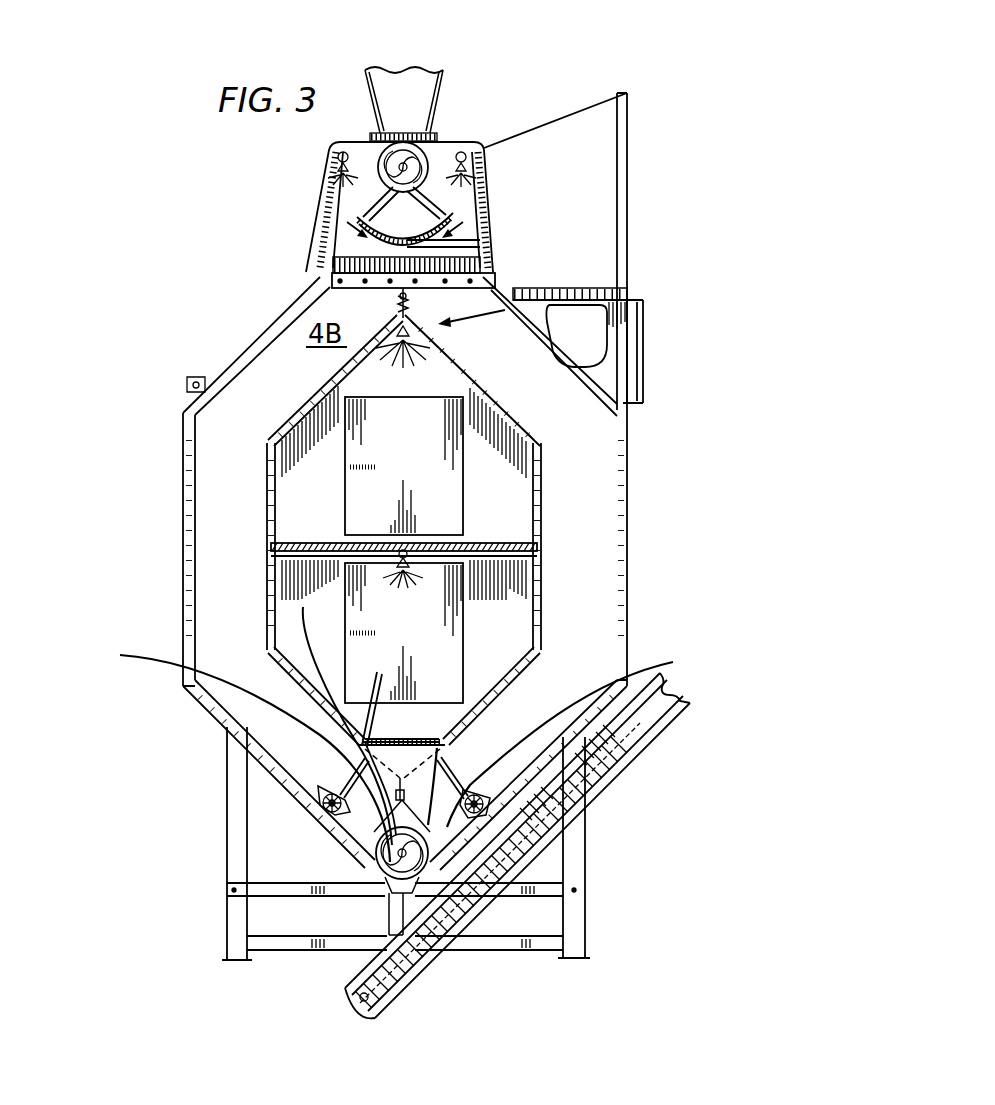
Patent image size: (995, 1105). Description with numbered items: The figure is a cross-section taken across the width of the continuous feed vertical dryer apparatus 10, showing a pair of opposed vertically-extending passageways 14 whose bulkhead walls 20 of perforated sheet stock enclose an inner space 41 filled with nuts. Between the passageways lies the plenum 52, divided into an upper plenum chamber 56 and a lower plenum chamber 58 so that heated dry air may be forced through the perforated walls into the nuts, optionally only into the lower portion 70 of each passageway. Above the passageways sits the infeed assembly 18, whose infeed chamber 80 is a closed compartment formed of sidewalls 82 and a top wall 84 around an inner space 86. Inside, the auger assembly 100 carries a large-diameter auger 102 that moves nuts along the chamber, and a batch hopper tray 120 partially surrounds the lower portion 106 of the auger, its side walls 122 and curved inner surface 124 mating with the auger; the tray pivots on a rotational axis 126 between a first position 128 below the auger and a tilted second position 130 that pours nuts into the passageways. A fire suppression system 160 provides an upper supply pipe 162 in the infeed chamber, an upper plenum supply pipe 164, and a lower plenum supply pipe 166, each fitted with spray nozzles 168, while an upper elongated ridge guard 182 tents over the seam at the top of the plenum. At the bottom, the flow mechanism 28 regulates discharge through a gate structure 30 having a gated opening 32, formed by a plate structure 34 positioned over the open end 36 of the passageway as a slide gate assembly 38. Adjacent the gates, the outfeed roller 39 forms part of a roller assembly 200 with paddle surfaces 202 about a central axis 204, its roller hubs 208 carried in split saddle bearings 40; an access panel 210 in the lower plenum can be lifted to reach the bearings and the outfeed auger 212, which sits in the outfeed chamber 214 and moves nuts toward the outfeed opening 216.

The continuous feed vertical dryer apparatus 10 is at (107, 936).
The vertically-extending passageway 14 is at (597, 492).
The infeed assembly 18 is at (306, 198).
The bulkhead wall 20 is at (620, 551).
The flow mechanism 28 is at (293, 824).
The gate structure 30 is at (570, 738).
The gated opening 32 is at (375, 828).
The plate structure 34 is at (237, 749).
The open end 36 is at (317, 760).
The slide gate assembly 38 is at (378, 840).
The outfeed roller 39 is at (335, 830).
The split saddle bearing 40 is at (318, 789).
The inner space 41 is at (300, 405).
The plenum 52 is at (500, 490).
The upper plenum chamber 56 is at (297, 465).
The lower plenum chamber 58 is at (300, 618).
The lower portion 70 is at (593, 632).
The infeed chamber 80 is at (447, 172).
The sidewall 82 is at (467, 176).
The top wall 84 is at (432, 168).
The inner space 86 is at (478, 218).
The auger assembly 100 is at (332, 142).
The auger 102 is at (390, 152).
The lower portion of the auger 106 is at (367, 180).
The batch hopper tray 120 is at (561, 262).
The side wall 122 is at (350, 226).
The curved inner surface 124 is at (462, 232).
The rotational axis 126 is at (411, 150).
The first position 128 is at (396, 290).
The second position 130 is at (347, 205).
The fire suppression system 160 is at (610, 291).
The upper supply pipe 162 is at (627, 97).
The upper plenum supply pipe 164 is at (443, 354).
The lower plenum supply pipe 166 is at (412, 556).
The spray nozzle 168 is at (402, 346).
The upper elongated ridge guard 182 is at (435, 301).
The roller assembly 200 is at (478, 841).
The paddle surface 202 is at (488, 806).
The central axis 204 is at (473, 792).
The roller hub 208 is at (333, 817).
The access panel 210 is at (430, 718).
The outfeed auger 212 is at (415, 874).
The outfeed chamber 214 is at (478, 890).
The outfeed opening 216 is at (396, 935).